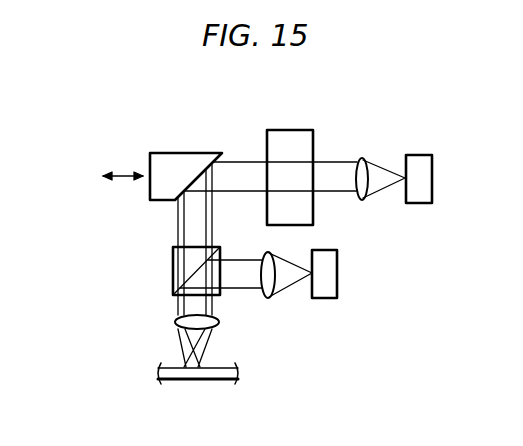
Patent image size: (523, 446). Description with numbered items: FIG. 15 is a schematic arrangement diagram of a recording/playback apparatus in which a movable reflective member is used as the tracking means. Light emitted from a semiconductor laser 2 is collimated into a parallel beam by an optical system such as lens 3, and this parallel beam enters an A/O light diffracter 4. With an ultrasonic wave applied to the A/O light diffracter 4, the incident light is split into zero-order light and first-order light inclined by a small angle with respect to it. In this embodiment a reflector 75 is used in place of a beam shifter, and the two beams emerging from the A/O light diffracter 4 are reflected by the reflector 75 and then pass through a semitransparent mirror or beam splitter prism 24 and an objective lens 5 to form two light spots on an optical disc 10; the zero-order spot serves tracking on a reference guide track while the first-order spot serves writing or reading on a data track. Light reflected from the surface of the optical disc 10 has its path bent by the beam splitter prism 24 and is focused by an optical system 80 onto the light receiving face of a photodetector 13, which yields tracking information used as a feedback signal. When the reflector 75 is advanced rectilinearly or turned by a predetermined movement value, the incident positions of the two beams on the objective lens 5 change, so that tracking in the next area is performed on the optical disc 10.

The reflector 75 is at (180, 152).
The A/O light diffracter 4 is at (272, 130).
The lens 3 is at (362, 158).
The semiconductor laser 2 is at (417, 155).
The beam splitter prism 24 is at (173, 272).
The optical system 80 is at (267, 298).
The photodetector 13 is at (325, 298).
The objective lens 5 is at (175, 322).
The optical disc 10 is at (197, 381).